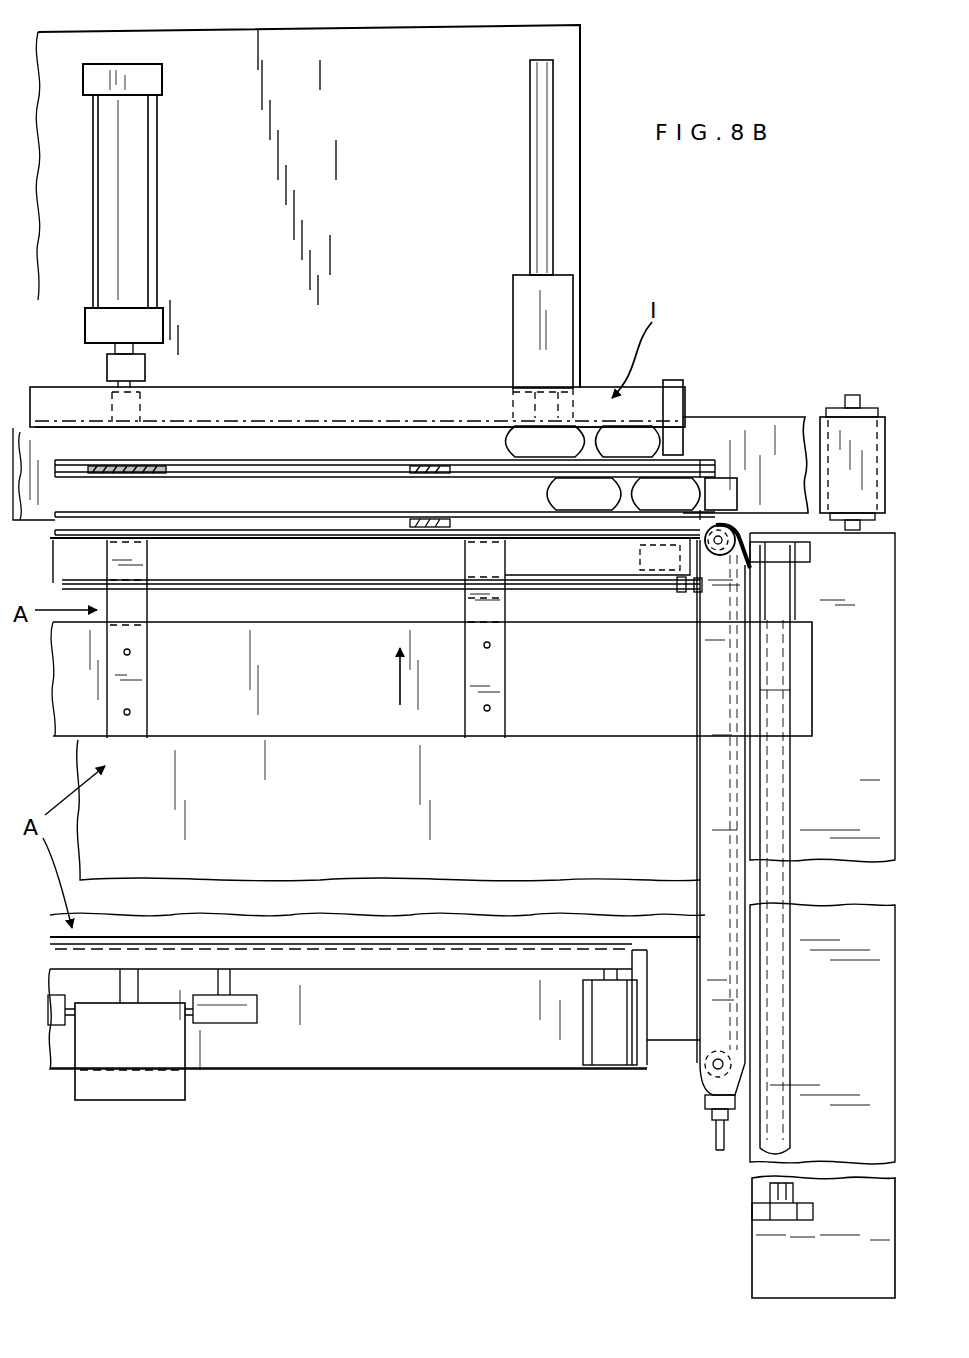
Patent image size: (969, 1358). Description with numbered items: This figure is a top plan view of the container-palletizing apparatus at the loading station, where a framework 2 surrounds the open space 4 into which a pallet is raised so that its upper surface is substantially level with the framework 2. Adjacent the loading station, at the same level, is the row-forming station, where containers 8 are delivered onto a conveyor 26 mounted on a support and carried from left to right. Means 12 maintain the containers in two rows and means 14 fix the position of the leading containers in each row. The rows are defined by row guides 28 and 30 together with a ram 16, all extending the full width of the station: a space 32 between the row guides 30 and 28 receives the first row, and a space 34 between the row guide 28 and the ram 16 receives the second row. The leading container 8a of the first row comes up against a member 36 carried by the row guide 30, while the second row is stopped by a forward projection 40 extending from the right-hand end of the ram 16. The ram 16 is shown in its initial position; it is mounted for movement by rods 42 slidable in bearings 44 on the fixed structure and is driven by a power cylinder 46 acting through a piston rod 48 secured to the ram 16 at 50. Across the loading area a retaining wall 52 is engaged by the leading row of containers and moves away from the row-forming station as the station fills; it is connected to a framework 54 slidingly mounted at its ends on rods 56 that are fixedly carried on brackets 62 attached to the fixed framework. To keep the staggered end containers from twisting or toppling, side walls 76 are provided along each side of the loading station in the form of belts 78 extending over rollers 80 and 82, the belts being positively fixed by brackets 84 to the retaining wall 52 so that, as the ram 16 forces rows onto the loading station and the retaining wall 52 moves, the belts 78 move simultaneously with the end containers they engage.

The framework 2 is at (78, 590).
The open space 4 is at (212, 590).
The containers 8 is at (520, 440).
The end container 8a is at (632, 440).
The means for maintaining containers in a row 12 is at (215, 432).
The means for fixing the position of leading containers 14 is at (725, 472).
The ram 16 is at (337, 425).
The conveyor 26 is at (798, 370).
The row guide 28 is at (252, 462).
The row guide 30 is at (270, 513).
The space 32 is at (420, 504).
The space 34 is at (412, 453).
The member 36 is at (715, 496).
The forward projection 40 is at (677, 398).
The rods 42 is at (545, 205).
The bearings 44 is at (528, 300).
The power cylinder 46 is at (148, 184).
The piston rod 48 is at (136, 383).
The securing point 50 is at (130, 432).
The retaining wall 52 is at (77, 534).
The framework 54 is at (598, 687).
The rods 56 is at (777, 797).
The brackets 62 is at (800, 553).
The side walls 76 is at (700, 838).
The belts 78 is at (702, 812).
The roller 80 is at (725, 530).
The roller 82 is at (707, 1083).
The brackets 84 is at (683, 587).